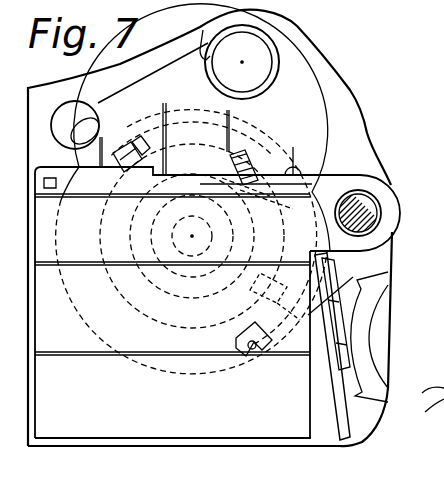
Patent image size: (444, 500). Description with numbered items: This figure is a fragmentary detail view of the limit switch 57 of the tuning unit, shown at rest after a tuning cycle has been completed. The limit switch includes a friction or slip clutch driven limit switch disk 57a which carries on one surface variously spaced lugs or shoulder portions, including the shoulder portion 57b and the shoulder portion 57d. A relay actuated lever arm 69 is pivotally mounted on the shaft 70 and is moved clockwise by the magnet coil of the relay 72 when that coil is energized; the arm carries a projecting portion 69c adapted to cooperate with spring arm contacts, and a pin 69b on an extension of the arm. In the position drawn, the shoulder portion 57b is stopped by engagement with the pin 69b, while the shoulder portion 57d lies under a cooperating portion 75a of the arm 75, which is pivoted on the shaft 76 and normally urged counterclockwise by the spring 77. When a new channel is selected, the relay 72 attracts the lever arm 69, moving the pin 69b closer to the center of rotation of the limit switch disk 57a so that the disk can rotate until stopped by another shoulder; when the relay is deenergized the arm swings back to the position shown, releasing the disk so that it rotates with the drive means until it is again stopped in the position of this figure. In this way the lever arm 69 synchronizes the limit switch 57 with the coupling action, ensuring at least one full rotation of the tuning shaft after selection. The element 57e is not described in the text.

The limit switch 57 is at (295, 134).
The limit switch disk 57a is at (110, 353).
The shoulder portion 57b is at (236, 342).
The shoulder portion 57d is at (146, 153).
The slot 57e is at (278, 273).
The lever arm 69 is at (334, 372).
The pin 69b is at (250, 355).
The projecting portion 69c is at (260, 175).
The shaft 70 is at (366, 196).
The relay 72 is at (317, 407).
The arm 75 is at (118, 98).
The cooperating portion 75a is at (191, 132).
The shaft 76 is at (258, 62).
The spring 77 is at (204, 31).